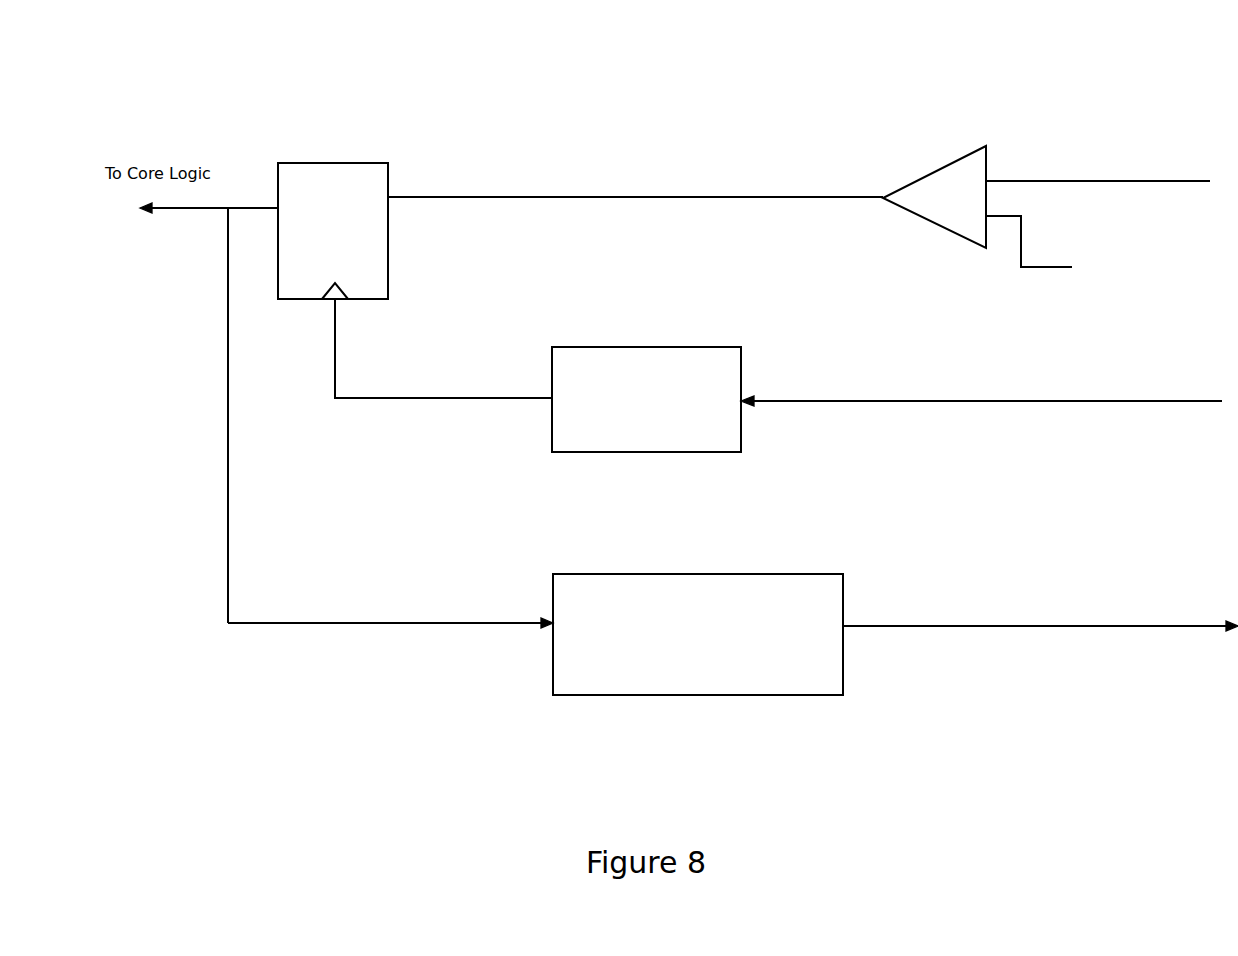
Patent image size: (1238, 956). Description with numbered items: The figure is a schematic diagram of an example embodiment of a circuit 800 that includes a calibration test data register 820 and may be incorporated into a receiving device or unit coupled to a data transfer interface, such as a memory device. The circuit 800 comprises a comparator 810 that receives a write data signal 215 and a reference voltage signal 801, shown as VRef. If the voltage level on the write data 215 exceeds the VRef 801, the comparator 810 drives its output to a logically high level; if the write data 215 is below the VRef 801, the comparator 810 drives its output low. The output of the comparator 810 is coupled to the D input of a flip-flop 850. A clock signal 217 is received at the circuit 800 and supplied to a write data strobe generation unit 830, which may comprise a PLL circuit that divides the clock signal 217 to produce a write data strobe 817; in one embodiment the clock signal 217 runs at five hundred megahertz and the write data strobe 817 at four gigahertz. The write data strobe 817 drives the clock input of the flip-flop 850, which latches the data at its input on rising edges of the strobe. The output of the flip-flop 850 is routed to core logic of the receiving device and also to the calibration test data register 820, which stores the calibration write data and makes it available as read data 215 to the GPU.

The circuit 800 is at (601, 52).
The flip-flop 850 is at (333, 231).
The comparator 810 is at (934, 197).
The write data signal 215 is at (1040, 394).
The reference voltage signal 801 is at (1059, 241).
The write data strobe generation unit 830 is at (646, 399).
The clock signal 217 is at (981, 391).
The write data strobe 817 is at (443, 371).
The calibration test data register 820 is at (535, 634).